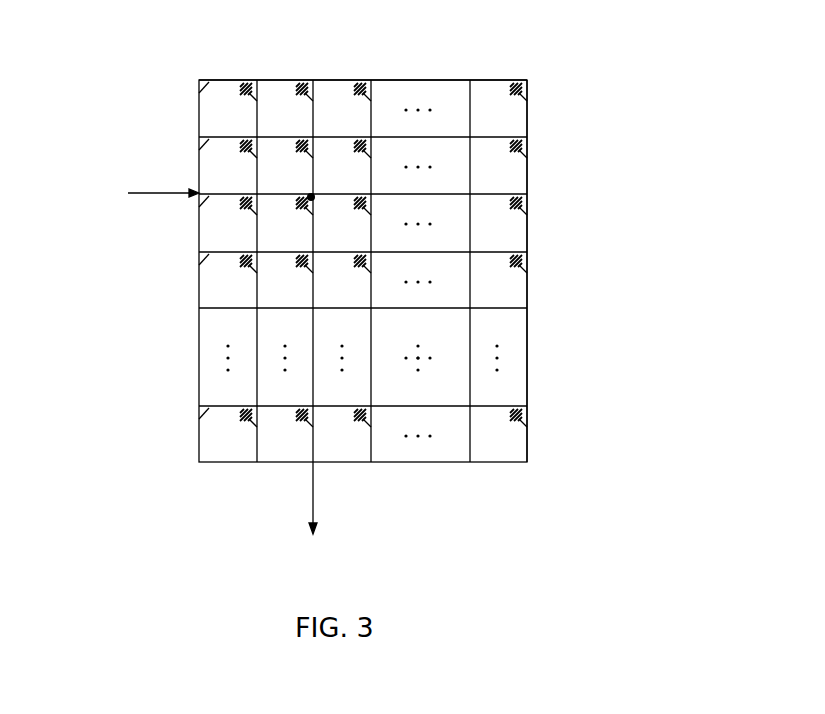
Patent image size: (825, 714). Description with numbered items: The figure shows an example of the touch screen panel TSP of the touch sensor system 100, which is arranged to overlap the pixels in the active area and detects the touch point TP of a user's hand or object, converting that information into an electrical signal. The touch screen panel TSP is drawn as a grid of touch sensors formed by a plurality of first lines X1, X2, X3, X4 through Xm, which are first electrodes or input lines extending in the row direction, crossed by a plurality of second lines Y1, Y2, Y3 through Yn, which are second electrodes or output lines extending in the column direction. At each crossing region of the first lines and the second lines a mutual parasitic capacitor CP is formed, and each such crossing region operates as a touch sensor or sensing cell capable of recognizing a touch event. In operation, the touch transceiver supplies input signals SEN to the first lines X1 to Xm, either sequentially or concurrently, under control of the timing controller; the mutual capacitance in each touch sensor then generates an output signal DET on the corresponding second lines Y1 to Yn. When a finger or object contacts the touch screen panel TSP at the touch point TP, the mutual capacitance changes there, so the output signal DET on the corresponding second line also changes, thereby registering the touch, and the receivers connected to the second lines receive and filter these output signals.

The touch sensor system 100 is at (497, 271).
The touch screen panel TSP is at (530, 358).
The first line X1 is at (199, 93).
The first line X2 is at (199, 150).
The first line X3 is at (199, 207).
The first line X4 is at (199, 265).
The first line Xm is at (199, 419).
The second line Y1 is at (265, 80).
The second line Y2 is at (320, 80).
The second line Y3 is at (379, 80).
The second line Yn is at (527, 86).
The touch point TP is at (312, 196).
The mutual parasitic capacitor CP is at (530, 200).
The input signal SEN is at (163, 185).
The output signal DET is at (329, 498).